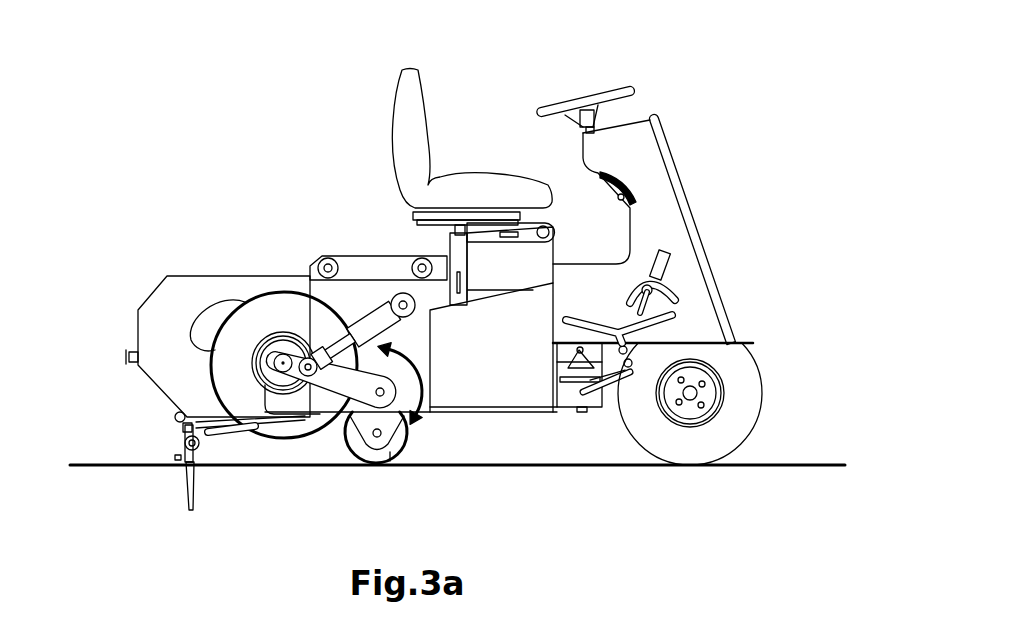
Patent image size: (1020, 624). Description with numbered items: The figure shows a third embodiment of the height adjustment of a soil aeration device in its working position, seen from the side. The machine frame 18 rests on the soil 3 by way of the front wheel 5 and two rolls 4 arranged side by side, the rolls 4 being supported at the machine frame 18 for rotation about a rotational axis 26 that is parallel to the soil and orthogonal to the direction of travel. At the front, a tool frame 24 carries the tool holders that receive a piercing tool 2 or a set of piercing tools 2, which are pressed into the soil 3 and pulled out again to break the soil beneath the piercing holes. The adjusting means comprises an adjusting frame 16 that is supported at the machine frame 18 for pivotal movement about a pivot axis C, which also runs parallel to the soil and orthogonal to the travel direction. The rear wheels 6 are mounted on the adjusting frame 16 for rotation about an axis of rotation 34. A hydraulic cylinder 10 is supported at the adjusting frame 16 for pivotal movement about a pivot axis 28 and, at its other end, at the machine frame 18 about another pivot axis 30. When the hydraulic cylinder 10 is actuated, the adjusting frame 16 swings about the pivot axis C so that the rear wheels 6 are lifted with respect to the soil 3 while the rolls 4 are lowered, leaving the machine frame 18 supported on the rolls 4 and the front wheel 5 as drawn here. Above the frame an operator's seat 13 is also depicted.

The piercing tool 2 is at (193, 485).
The soil 3 is at (800, 467).
The roll 4 is at (392, 463).
The front wheel 5 is at (688, 443).
The rear wheel 6 is at (258, 320).
The hydraulic cylinder 10 is at (391, 303).
The seat 13 is at (405, 99).
The adjusting frame 16 is at (330, 382).
The machine frame 18 is at (498, 380).
The tool frame 24 is at (145, 290).
The rotational axis 26 is at (376, 437).
The pivot axis 28 is at (312, 356).
The pivot axis 30 is at (397, 292).
The axis of rotation 34 is at (167, 305).
The pivot axis C is at (378, 430).